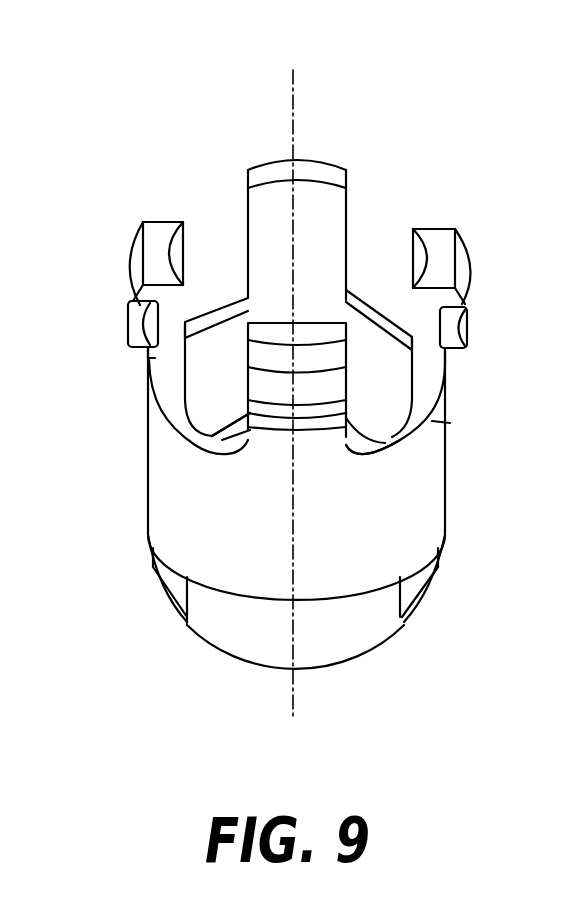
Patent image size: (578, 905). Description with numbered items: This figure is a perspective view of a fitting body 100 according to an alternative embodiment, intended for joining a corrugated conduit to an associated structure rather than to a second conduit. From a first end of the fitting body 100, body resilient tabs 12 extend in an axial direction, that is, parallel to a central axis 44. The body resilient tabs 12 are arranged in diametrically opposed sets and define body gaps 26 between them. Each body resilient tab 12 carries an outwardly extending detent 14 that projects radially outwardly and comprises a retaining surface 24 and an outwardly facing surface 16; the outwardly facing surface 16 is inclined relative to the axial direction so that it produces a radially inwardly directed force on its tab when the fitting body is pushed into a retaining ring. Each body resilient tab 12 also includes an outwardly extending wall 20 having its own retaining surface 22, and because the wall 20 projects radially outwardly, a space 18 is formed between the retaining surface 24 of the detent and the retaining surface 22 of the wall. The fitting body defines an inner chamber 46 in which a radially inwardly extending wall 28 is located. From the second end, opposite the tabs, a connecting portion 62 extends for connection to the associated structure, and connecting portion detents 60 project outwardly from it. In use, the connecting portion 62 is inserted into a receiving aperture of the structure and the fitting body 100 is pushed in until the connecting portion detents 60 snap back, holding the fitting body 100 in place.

The fitting body 100 is at (142, 447).
The central axis 44 is at (293, 92).
The body resilient tab 12 is at (263, 240).
The body gap 26 is at (220, 207).
The outwardly extending detent 14 is at (157, 240).
The outwardly facing surface 16 is at (143, 236).
The retaining surface 24 is at (124, 270).
The space 18 is at (140, 316).
The retaining surface 22 is at (140, 332).
The outwardly extending wall 20 is at (148, 347).
The inner chamber 46 is at (450, 423).
The radially inwardly extending wall 28 is at (384, 413).
The connecting portion detent 60 is at (171, 573).
The connecting portion 62 is at (370, 655).